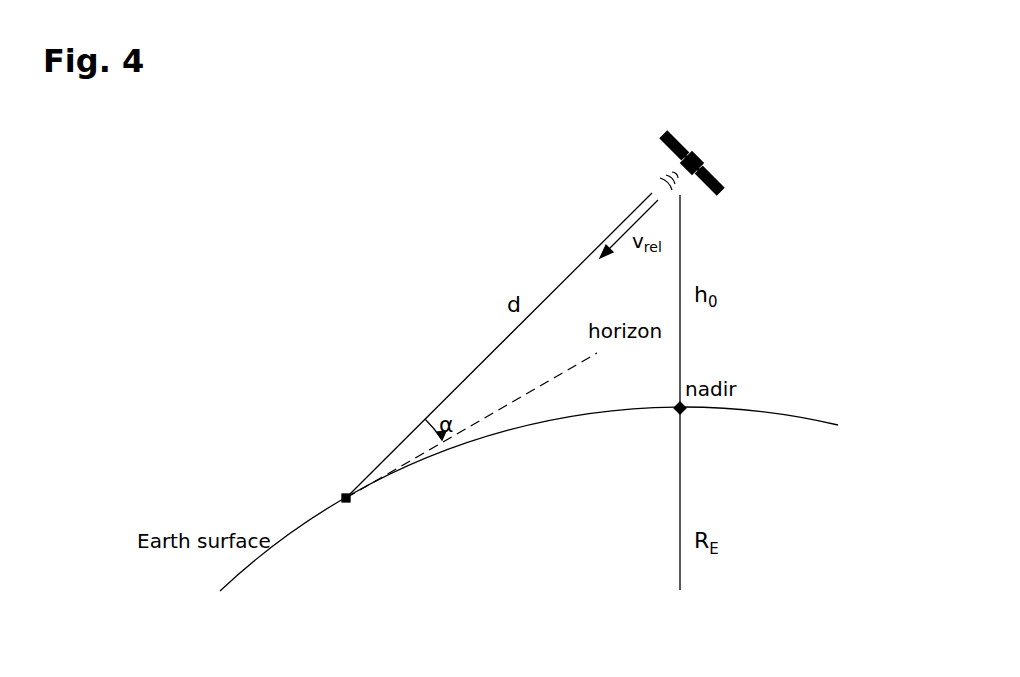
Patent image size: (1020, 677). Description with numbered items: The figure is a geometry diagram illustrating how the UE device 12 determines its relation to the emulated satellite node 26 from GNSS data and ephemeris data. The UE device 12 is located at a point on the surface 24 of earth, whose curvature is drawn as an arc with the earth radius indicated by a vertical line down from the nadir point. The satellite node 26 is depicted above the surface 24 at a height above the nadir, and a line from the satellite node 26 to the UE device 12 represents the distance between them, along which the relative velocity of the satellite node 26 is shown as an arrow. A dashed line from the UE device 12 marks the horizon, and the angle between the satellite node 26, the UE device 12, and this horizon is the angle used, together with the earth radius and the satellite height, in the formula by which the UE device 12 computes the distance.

The satellite node 26 is at (663, 137).
The user equipment device 12 is at (349, 507).
The surface of earth 24 is at (264, 553).